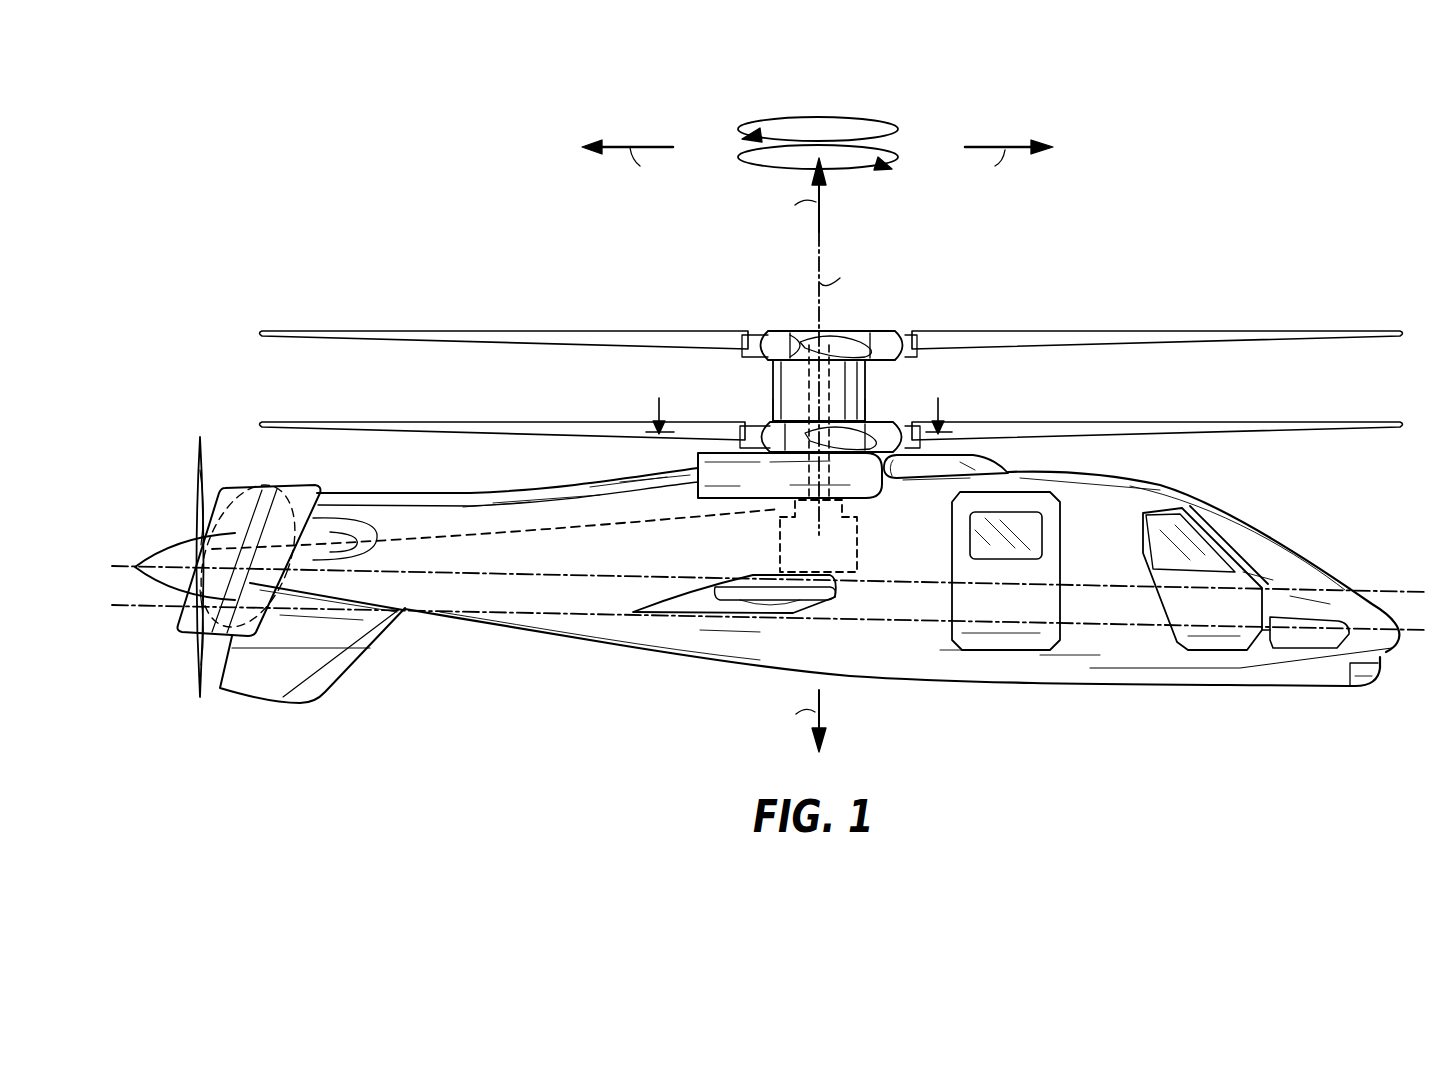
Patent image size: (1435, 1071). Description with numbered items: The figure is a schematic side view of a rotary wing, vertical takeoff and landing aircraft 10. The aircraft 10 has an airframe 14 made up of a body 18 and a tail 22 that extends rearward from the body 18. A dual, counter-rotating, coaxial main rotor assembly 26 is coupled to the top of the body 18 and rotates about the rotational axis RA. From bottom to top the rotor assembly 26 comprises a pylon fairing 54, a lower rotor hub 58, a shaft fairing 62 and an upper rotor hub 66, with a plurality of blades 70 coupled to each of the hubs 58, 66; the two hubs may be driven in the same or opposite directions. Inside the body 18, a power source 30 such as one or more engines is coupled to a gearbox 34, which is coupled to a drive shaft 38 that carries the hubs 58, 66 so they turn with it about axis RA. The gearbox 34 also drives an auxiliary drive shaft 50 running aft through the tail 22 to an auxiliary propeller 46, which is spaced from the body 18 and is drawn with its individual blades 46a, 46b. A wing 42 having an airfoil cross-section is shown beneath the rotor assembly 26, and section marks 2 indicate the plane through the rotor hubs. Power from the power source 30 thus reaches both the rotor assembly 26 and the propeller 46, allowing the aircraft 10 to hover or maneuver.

The section line 2 is at (799, 399).
The rotary wing aircraft 10 is at (484, 177).
The airframe 14 is at (1040, 678).
The body 18 is at (518, 648).
The tail 22 is at (373, 667).
The main rotor assembly 26 is at (898, 292).
The power source 30 is at (843, 507).
The gearbox 34 is at (860, 553).
The drive shaft 38 is at (810, 385).
The wing 42 is at (680, 595).
The auxiliary propeller 46 is at (195, 472).
The propeller blade 46a is at (208, 545).
The propeller blade 46b is at (212, 610).
The auxiliary drive shaft 50 is at (488, 537).
The pylon fairing 54 is at (692, 492).
The lower rotor hub 58 is at (884, 422).
The shaft fairing 62 is at (773, 402).
The upper rotor hub 66 is at (810, 327).
The blades 70 is at (398, 330).